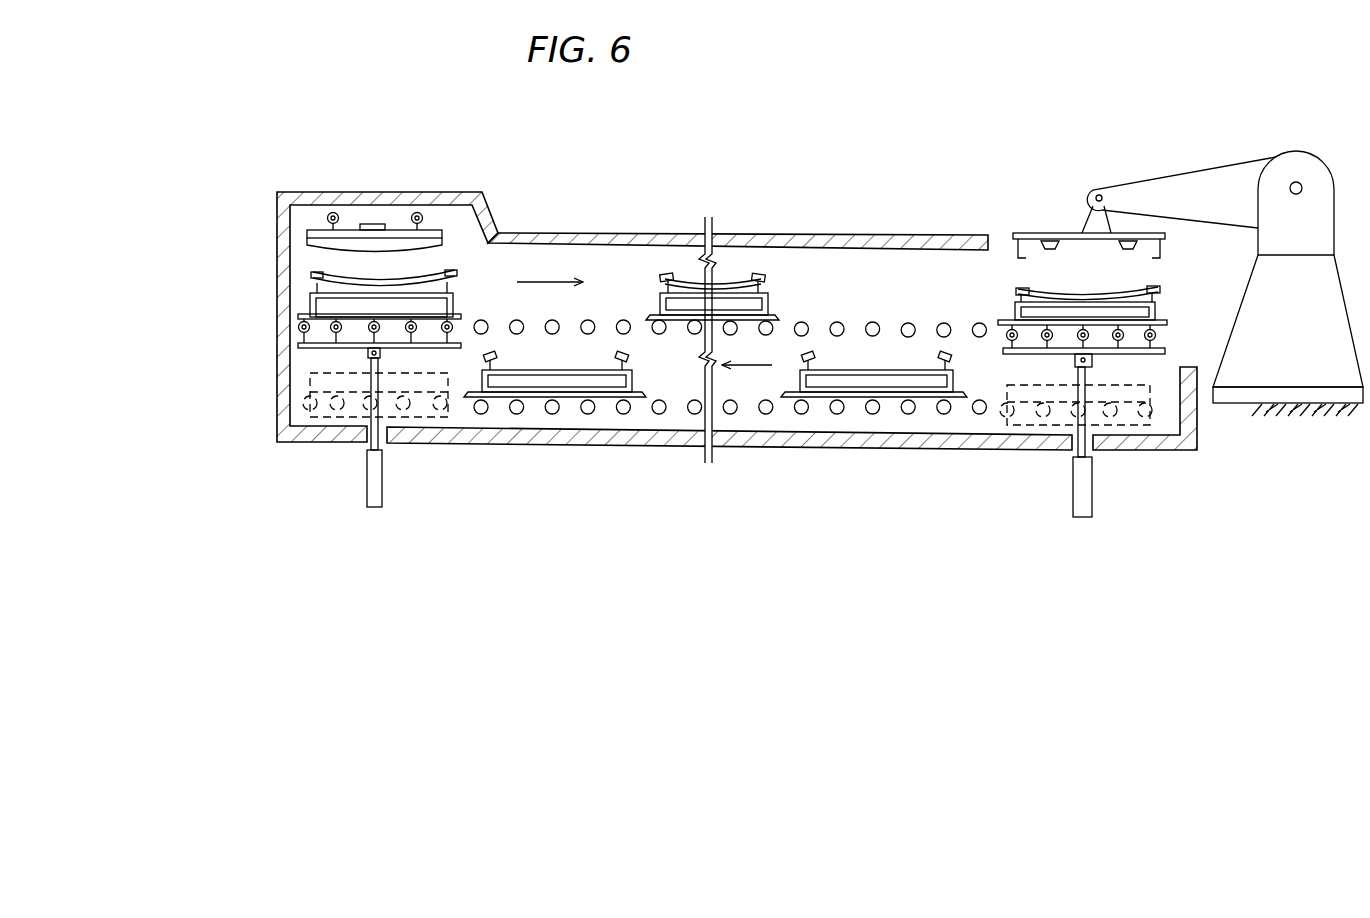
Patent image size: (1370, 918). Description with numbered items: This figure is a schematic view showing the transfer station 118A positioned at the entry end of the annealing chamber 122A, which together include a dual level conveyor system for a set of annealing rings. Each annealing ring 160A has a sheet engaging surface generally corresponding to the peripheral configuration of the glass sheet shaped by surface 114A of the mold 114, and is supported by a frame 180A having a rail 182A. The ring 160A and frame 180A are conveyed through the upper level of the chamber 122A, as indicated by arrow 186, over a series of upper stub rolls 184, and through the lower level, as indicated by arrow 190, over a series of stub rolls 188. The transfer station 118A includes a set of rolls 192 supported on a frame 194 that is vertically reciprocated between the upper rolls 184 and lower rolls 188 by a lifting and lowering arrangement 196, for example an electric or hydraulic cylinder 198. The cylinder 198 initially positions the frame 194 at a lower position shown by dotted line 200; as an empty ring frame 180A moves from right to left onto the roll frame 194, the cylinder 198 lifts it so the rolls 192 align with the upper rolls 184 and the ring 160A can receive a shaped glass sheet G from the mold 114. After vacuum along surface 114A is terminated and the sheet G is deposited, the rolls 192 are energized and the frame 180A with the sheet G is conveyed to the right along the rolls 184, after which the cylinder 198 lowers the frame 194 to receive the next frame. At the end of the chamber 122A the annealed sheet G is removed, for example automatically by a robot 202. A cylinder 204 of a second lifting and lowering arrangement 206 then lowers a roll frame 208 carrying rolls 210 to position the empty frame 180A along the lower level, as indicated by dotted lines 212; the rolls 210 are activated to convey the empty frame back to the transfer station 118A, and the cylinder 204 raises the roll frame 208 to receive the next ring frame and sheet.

The transfer station 118A is at (407, 161).
The annealing chamber 122A is at (742, 199).
The mold 114 is at (435, 230).
The shaping surface 114A is at (327, 249).
The annealing ring 160A is at (318, 281).
The frame 180A is at (308, 303).
The rail 182A is at (330, 328).
The rolls 192 is at (367, 328).
The frame 194 is at (357, 350).
The lifting and lowering arrangement 196 is at (362, 454).
The cylinder 198 is at (386, 481).
The dotted line 200 is at (418, 420).
The upper stub rolls 184 is at (946, 322).
The arrow 186 is at (553, 285).
The stub rolls 188 is at (692, 414).
The arrow 190 is at (752, 366).
The shaped glass sheet G is at (417, 270).
The robot 202 is at (1170, 176).
The roll frame 208 is at (1143, 357).
The rolls 210 is at (1127, 333).
The cylinder 204 is at (1072, 482).
The lifting and lowering arrangement 206 is at (1090, 470).
The dotted lines 212 is at (1130, 440).